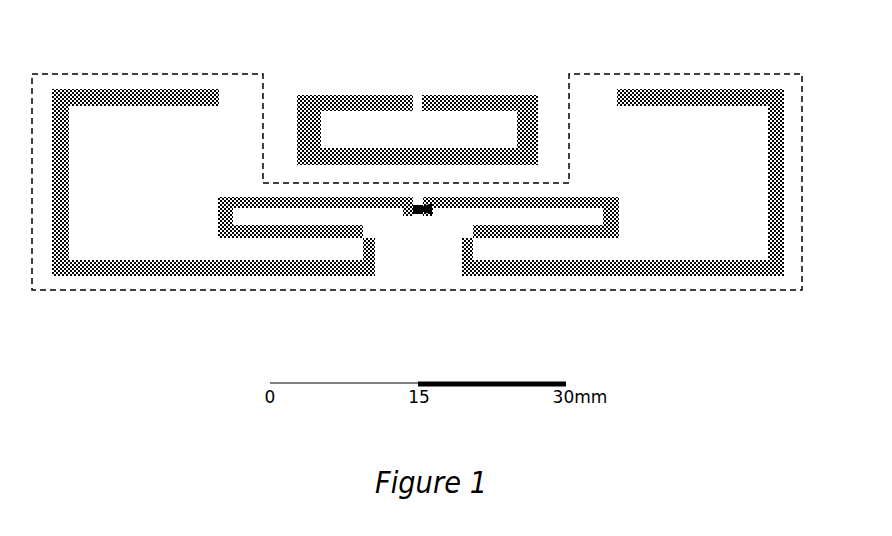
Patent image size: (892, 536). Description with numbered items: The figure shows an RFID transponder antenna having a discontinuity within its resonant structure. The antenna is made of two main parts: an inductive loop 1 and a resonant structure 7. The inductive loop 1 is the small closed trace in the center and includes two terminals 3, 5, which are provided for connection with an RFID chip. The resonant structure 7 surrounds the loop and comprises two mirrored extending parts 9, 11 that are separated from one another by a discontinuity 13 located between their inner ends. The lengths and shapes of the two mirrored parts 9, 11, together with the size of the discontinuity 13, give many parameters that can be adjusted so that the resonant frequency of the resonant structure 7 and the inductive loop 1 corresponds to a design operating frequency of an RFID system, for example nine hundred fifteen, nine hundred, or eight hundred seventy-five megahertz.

The inductive loop 1 is at (422, 106).
The terminal 3 is at (406, 102).
The terminal 5 is at (430, 102).
The resonant structure 7 is at (657, 75).
The mirrored extending part 9 is at (188, 100).
The mirrored extending part 11 is at (700, 102).
The discontinuity 13 is at (432, 209).